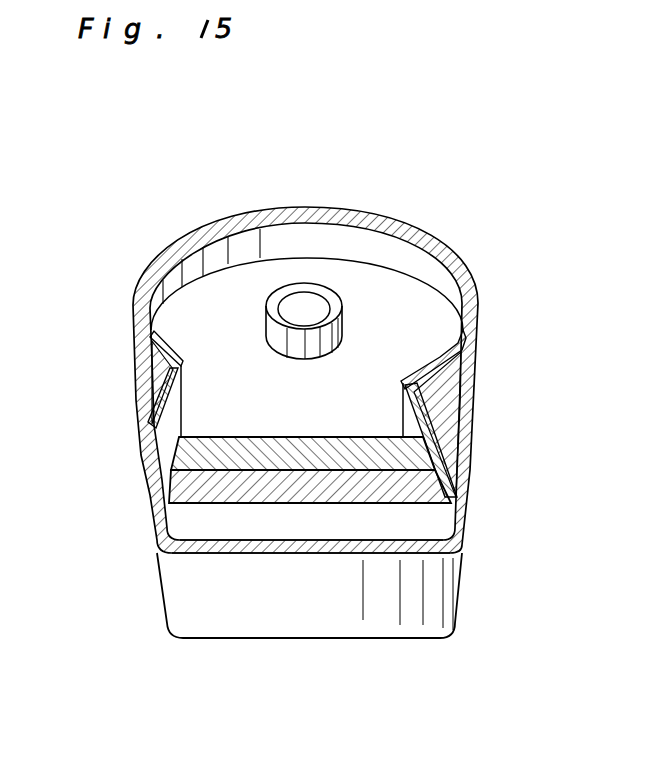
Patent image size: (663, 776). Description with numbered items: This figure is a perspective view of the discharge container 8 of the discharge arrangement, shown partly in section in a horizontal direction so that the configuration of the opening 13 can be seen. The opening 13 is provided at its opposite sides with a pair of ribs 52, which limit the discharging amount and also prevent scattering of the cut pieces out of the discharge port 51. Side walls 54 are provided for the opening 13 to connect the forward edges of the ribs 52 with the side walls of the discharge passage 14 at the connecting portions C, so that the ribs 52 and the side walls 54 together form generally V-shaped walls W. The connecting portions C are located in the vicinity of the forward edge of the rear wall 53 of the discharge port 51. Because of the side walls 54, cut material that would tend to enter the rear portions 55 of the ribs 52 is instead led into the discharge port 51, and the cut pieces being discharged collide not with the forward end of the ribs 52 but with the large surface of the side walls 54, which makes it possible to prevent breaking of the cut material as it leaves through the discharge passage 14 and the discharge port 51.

The cap 8 is at (382, 242).
The opening 13 is at (337, 393).
The discharge passage 14 is at (423, 518).
The discharge port 51 is at (295, 522).
The ribs 52 is at (152, 355).
The rear wall 53 is at (157, 540).
The side walls 54 is at (158, 488).
The rear portions 55 is at (146, 400).
The V-shaped walls W is at (157, 395).
The connecting portions C is at (179, 366).